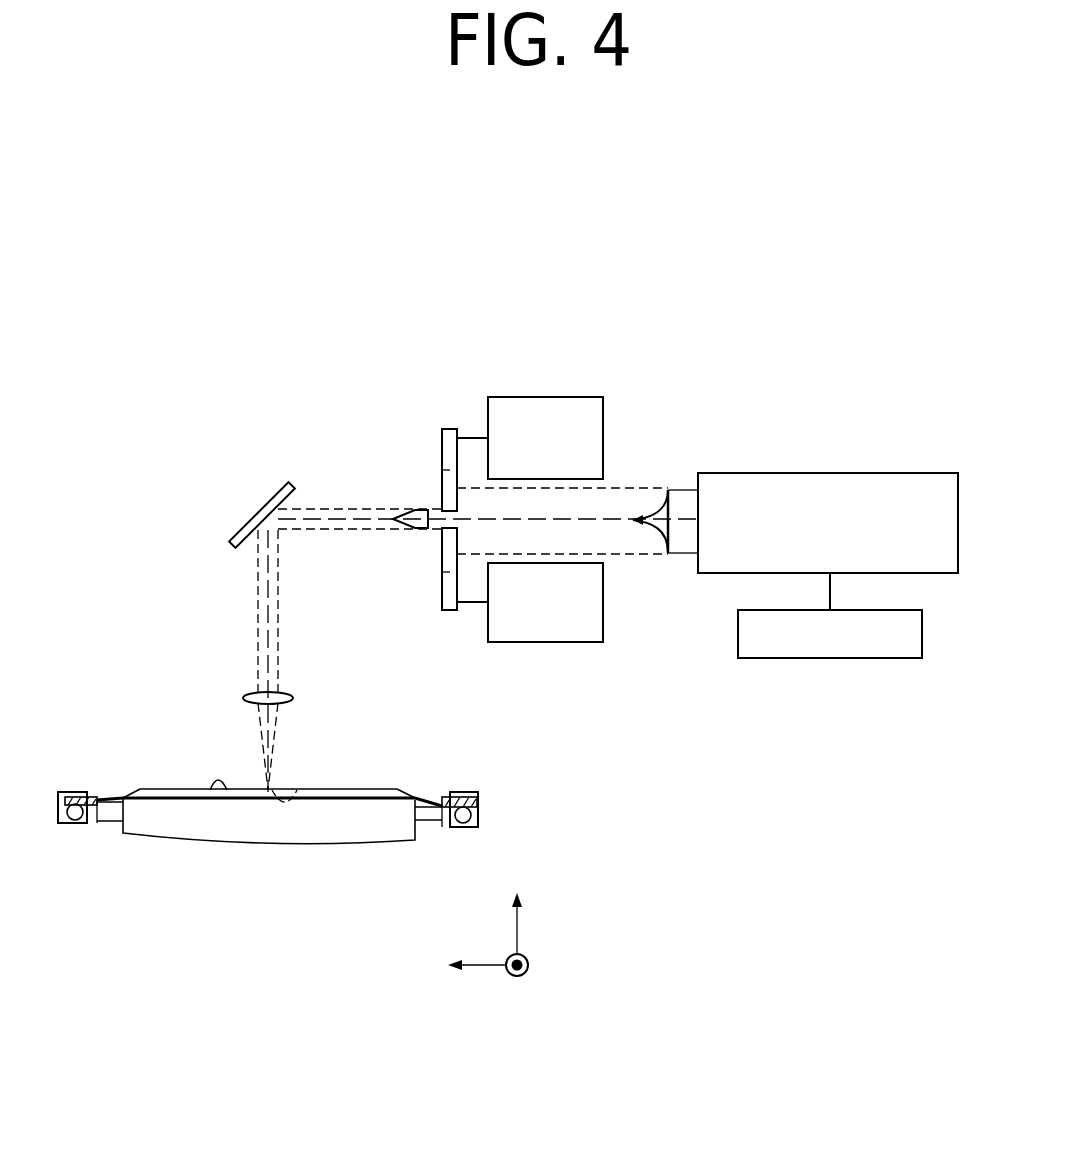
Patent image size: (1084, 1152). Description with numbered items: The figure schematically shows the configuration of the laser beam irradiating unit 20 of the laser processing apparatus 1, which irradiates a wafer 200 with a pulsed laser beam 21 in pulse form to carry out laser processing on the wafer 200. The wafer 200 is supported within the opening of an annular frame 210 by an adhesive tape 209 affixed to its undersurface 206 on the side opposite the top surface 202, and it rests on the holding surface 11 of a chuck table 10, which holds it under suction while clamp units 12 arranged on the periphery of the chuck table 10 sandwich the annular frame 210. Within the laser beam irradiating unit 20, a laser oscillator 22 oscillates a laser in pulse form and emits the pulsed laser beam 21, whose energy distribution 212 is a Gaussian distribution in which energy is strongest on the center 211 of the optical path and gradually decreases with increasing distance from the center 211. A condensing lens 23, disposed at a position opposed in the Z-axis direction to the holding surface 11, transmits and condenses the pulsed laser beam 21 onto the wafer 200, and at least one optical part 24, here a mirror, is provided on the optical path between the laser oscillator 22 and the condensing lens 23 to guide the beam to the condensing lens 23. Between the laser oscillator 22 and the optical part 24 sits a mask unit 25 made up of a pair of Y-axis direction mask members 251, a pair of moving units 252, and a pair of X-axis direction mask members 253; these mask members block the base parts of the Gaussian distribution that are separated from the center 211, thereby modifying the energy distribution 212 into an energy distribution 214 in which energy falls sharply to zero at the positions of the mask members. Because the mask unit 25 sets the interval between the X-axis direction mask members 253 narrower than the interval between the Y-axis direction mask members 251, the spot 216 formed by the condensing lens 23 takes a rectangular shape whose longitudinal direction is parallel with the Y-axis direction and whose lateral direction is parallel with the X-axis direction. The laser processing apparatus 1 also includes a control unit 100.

The laser processing apparatus 1 is at (487, 322).
The chuck table 10 is at (330, 822).
The holding surface 11 is at (217, 791).
The clamp unit 12 is at (60, 814).
The laser beam irradiating unit 20 is at (636, 366).
The pulsed laser beam 21 is at (332, 507).
The laser oscillator 22 is at (912, 473).
The condensing lens 23 is at (284, 694).
The optical part 24 is at (252, 505).
The mask unit 25 is at (476, 522).
The control unit 100 is at (887, 658).
The wafer 200 is at (265, 813).
The top surface 202 is at (163, 790).
The undersurface 206 is at (163, 800).
The adhesive tape 209 is at (427, 797).
The annular frame 210 is at (467, 793).
The center 211 is at (620, 527).
The energy distribution 212 is at (663, 492).
The energy distribution 214 is at (404, 509).
The spot 216 is at (297, 790).
The Y-axis direction mask member 251 is at (450, 428).
The moving unit 252 is at (587, 397).
The X-axis direction mask member 253 is at (441, 497).